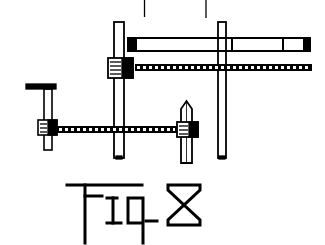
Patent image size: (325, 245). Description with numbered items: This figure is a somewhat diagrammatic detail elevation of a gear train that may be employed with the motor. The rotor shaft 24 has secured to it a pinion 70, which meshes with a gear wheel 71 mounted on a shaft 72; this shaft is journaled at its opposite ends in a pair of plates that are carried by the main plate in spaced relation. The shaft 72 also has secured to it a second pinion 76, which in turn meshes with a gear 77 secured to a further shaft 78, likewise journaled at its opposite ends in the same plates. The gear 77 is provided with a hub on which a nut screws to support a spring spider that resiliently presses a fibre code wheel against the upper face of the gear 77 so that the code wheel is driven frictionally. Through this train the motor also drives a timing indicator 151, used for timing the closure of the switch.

The timing indicator 151 is at (34, 84).
The shaft 72 is at (118, 103).
The pinion 76 is at (110, 67).
The shaft 78 is at (227, 32).
The gear 77 is at (291, 71).
The gear wheel 71 is at (134, 134).
The rotor shaft 24 is at (193, 151).
The pinion 70 is at (199, 127).